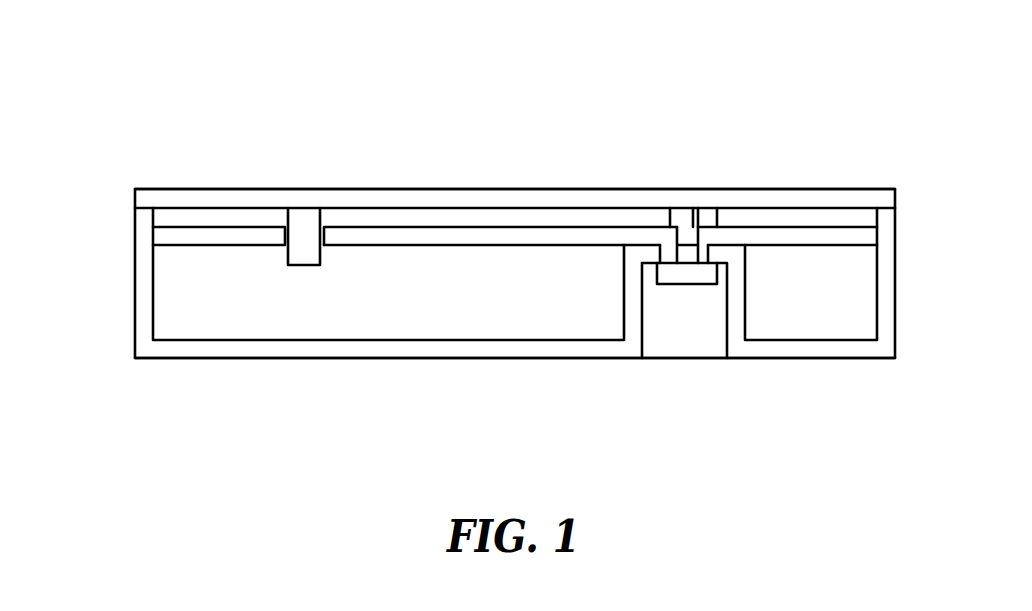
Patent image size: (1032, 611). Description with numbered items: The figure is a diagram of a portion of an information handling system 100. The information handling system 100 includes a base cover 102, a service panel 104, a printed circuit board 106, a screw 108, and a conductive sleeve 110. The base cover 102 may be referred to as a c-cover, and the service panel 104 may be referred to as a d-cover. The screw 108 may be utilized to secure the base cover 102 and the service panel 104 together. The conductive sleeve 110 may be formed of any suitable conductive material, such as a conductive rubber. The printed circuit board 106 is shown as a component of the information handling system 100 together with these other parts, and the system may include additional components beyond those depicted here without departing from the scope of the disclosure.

The information handling system 100 is at (728, 76).
The base cover 102 is at (400, 198).
The service panel 104 is at (360, 348).
The printed circuit board 106 is at (170, 237).
The screw 108 is at (685, 275).
The conductive sleeve 110 is at (685, 238).